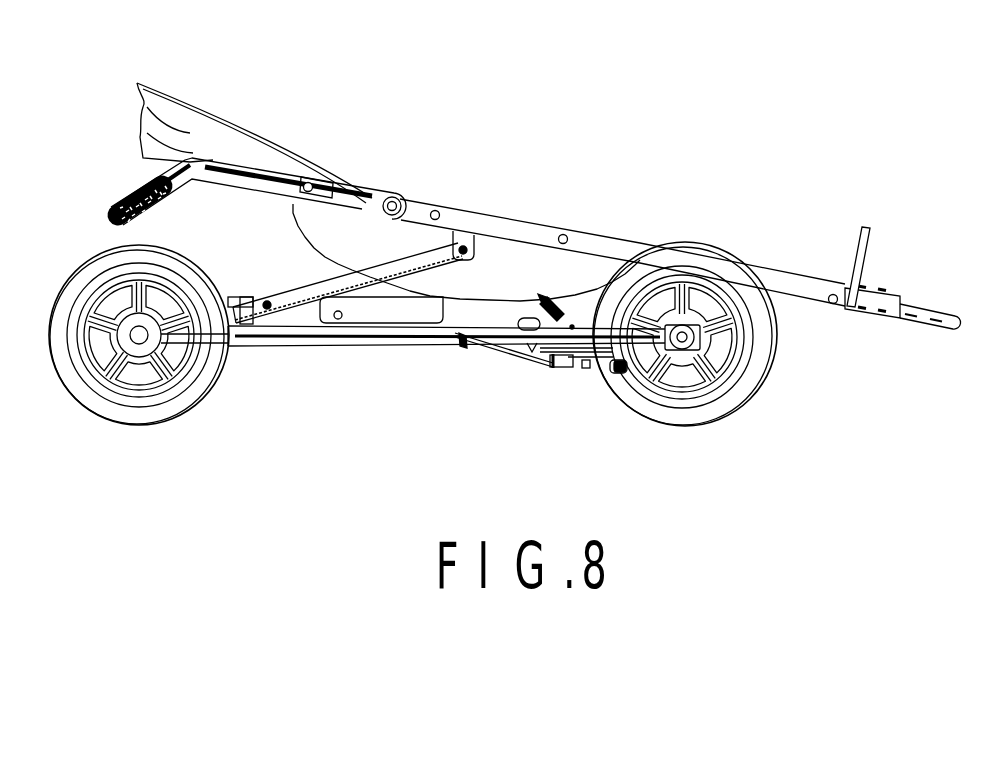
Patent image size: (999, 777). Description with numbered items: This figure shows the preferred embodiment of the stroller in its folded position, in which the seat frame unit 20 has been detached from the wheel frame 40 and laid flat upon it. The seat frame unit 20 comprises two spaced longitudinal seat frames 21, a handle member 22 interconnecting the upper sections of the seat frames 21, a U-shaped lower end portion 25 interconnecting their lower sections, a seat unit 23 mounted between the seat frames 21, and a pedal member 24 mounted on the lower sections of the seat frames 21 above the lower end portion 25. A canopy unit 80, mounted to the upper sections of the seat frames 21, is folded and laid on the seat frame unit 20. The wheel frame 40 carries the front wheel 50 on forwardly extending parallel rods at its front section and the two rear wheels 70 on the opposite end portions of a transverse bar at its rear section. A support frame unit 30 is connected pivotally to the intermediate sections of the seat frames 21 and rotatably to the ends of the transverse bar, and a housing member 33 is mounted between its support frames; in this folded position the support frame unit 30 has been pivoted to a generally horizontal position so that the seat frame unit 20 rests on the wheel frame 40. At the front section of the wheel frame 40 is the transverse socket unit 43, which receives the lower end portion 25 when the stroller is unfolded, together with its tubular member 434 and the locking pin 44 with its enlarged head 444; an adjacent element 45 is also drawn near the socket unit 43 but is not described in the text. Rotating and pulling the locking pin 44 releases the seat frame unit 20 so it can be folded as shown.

The seat frame unit 20 is at (460, 209).
The seat frames 21 is at (267, 177).
The handle member 22 is at (122, 199).
The seat unit 23 is at (503, 258).
The pedal member 24 is at (868, 229).
The lower end portion 25 is at (947, 329).
The support frame unit 30 is at (308, 283).
The housing member 33 is at (375, 325).
The wheel frame 40 is at (462, 340).
The socket unit 43 is at (527, 362).
The locking pin 44 is at (523, 297).
The stop member 45 is at (602, 372).
The front wheel 50 is at (727, 249).
The rear wheels 70 is at (175, 428).
The canopy unit 80 is at (217, 115).
The tubular member 434 is at (520, 322).
The enlarged head 444 is at (563, 306).